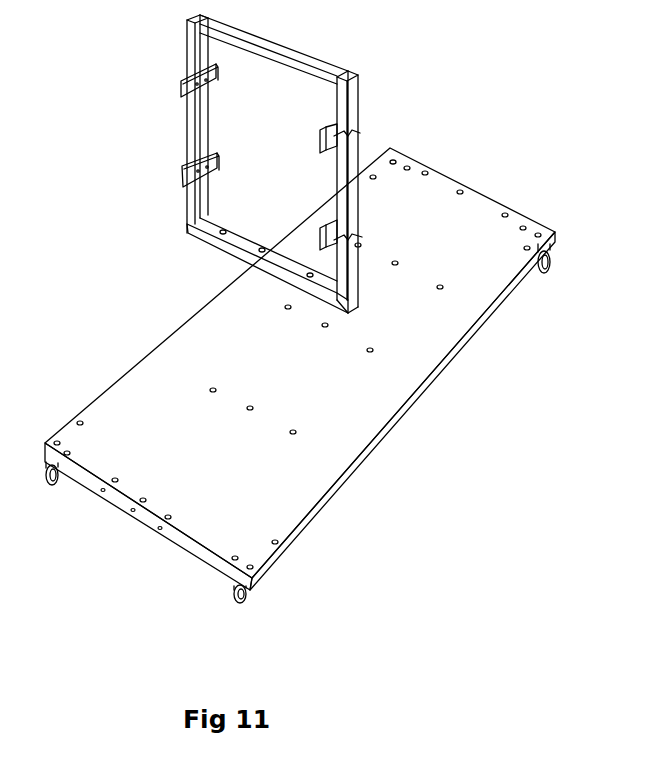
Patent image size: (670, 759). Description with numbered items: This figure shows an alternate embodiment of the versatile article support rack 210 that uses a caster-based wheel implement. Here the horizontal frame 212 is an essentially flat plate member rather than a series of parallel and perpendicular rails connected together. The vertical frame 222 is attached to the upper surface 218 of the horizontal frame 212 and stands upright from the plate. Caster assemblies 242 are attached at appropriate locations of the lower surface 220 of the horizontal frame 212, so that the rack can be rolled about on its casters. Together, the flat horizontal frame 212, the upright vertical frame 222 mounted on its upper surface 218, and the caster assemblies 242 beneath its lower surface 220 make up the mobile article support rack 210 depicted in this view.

The versatile article support rack 210 is at (296, 346).
The horizontal frame 212 is at (393, 427).
The upper surface 218 is at (312, 477).
The lower surface 220 is at (287, 556).
The vertical frame 222 is at (185, 130).
The caster assemblies 242 is at (542, 277).